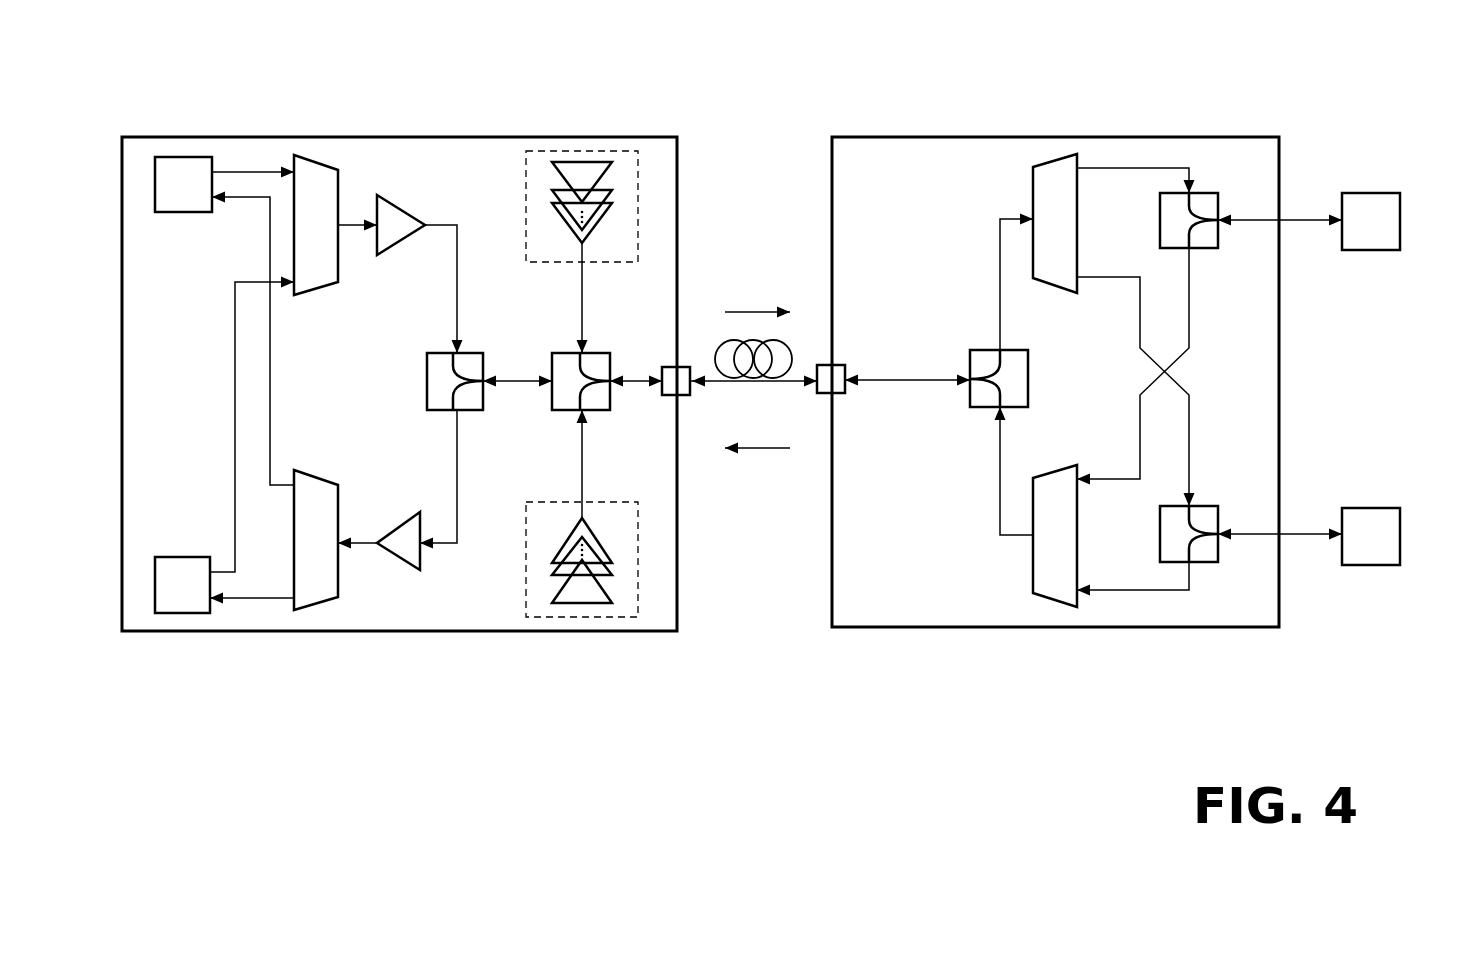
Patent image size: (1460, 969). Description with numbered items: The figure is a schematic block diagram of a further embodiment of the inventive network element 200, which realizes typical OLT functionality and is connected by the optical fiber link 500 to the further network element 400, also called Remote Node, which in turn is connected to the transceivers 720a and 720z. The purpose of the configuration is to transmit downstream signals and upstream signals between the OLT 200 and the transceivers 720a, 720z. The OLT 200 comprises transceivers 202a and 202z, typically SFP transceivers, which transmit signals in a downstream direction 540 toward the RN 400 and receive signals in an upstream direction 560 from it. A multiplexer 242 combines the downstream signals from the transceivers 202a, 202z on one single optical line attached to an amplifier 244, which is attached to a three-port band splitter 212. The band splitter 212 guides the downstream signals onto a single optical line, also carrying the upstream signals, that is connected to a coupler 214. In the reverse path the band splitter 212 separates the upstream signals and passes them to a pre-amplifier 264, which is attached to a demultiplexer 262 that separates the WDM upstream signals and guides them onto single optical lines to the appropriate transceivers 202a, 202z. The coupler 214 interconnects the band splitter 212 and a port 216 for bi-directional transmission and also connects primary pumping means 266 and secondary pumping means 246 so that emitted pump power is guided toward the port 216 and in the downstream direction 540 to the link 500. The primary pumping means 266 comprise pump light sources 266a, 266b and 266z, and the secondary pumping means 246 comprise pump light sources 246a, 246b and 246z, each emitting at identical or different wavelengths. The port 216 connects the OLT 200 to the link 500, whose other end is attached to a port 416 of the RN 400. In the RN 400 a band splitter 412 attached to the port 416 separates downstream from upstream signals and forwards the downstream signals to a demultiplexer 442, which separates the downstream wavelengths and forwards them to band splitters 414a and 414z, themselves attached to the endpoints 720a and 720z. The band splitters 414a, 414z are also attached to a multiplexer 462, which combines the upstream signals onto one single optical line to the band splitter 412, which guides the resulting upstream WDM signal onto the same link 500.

The network element 200 is at (146, 137).
The transceiver 202a is at (200, 157).
The transceiver 202z is at (180, 613).
The multiplexer 242 is at (310, 155).
The amplifier 244 is at (395, 195).
The secondary pumping means 246 is at (526, 165).
The pump light source 246a is at (605, 212).
The pump light source 246b is at (605, 190).
The pump light source 246z is at (572, 162).
The band splitter 212 is at (470, 410).
The coupler 214 is at (597, 350).
The port 216 is at (687, 365).
The demultiplexer 262 is at (310, 608).
The pre-amplifier 264 is at (395, 570).
The primary pumping means 266 is at (526, 600).
The pump light source 266a is at (600, 548).
The pump light source 266b is at (600, 575).
The pump light source 266z is at (573, 603).
The optical fiber link 500 is at (790, 384).
The downstream direction 540 is at (764, 310).
The upstream direction 560 is at (762, 450).
The further network element 400 is at (885, 137).
The port 416 is at (828, 365).
The band splitter 412 is at (975, 350).
The demultiplexer 442 is at (1058, 155).
The multiplexer 462 is at (1055, 600).
The band splitter 414a is at (1205, 193).
The band splitter 414z is at (1205, 562).
The transceiver 720a is at (1375, 193).
The transceiver 720z is at (1387, 565).